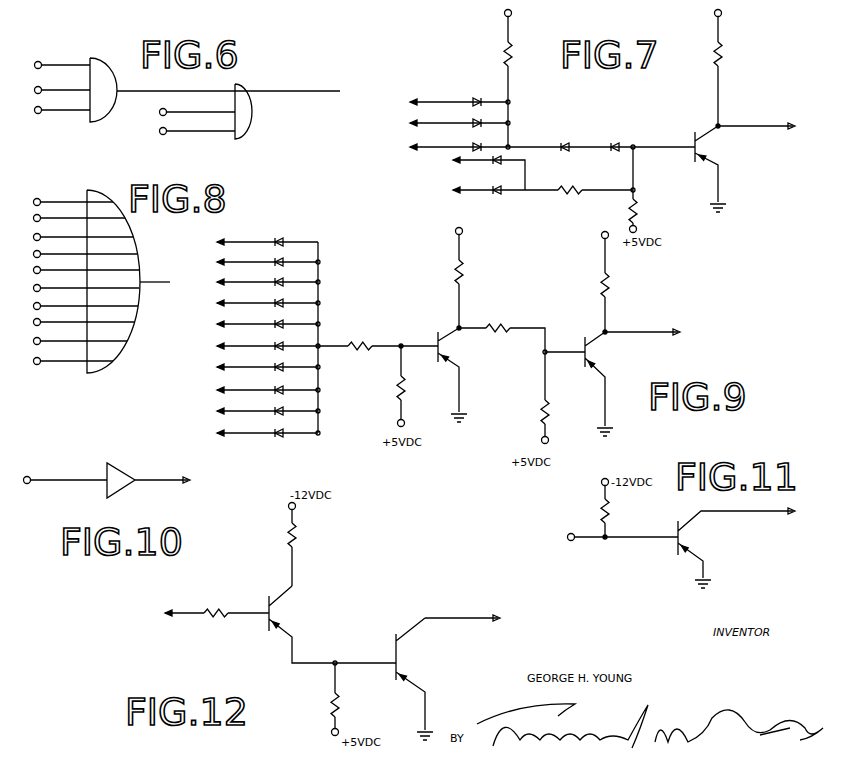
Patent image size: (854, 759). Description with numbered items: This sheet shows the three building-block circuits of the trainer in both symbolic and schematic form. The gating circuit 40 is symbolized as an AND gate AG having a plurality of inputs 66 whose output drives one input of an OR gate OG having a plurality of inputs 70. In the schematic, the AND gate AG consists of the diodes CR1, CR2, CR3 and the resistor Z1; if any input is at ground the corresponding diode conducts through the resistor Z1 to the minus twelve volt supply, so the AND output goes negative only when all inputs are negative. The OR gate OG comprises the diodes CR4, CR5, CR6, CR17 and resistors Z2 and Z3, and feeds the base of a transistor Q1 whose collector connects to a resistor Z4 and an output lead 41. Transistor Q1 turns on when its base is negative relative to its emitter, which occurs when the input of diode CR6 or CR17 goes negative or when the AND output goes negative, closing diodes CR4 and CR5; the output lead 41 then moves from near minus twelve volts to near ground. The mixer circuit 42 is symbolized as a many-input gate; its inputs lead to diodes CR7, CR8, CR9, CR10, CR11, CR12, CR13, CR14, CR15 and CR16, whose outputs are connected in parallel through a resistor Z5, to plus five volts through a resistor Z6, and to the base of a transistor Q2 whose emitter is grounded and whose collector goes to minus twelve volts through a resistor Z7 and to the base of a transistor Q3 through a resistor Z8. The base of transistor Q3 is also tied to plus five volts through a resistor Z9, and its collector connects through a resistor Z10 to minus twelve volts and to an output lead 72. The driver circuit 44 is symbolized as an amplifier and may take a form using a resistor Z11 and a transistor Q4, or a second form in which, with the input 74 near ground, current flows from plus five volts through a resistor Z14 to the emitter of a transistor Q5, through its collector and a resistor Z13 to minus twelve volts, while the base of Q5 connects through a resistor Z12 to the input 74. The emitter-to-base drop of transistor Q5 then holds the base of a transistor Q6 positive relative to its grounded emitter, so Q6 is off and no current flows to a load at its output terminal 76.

In FIG. 6, the gating circuit 40 is at (137, 86).
In FIG. 7, the output lead 41 is at (741, 126).
In FIG. 8, the mixer circuit 42 is at (144, 278).
In FIG. 10, the driver circuit 44 is at (144, 462).
In FIG. 11, the driver circuit 44 is at (660, 547).
In FIG. 6, the inputs 66 is at (45, 112).
In FIG. 6, the inputs 70 is at (173, 138).
In FIG. 9, the output lead 72 is at (636, 332).
In FIG. 12, the input terminal 74 is at (195, 613).
In FIG. 12, the output terminal 76 is at (447, 621).
In FIG. 6, the AND gate AG is at (97, 72).
In FIG. 7, the AND gate AG is at (638, 139).
In FIG. 6, the OR gate OG is at (249, 104).
In FIG. 7, the OR gate OG is at (514, 115).
In FIG. 7, the transistor Q1 is at (716, 169).
In FIG. 9, the transistor Q2 is at (453, 375).
In FIG. 9, the transistor Q3 is at (604, 384).
In FIG. 11, the transistor Q4 is at (736, 548).
In FIG. 12, the transistor Q5 is at (332, 624).
In FIG. 12, the transistor Q6 is at (414, 679).
In FIG. 7, the resistor Z1 is at (518, 56).
In FIG. 7, the resistor Z2 is at (570, 182).
In FIG. 7, the resistor Z3 is at (643, 190).
In FIG. 7, the resistor Z4 is at (728, 68).
In FIG. 9, the resistor Z5 is at (378, 339).
In FIG. 9, the resistor Z6 is at (411, 385).
In FIG. 9, the resistor Z7 is at (469, 278).
In FIG. 9, the resistor Z8 is at (501, 339).
In FIG. 9, the resistor Z9 is at (563, 397).
In FIG. 9, the resistor Z10 is at (617, 282).
In FIG. 11, the resistor Z11 is at (618, 509).
In FIG. 12, the resistor Z12 is at (217, 605).
In FIG. 12, the resistor Z13 is at (306, 545).
In FIG. 12, the resistor Z14 is at (348, 698).
In FIG. 7, the diode CR1 is at (459, 96).
In FIG. 7, the diode CR2 is at (459, 117).
In FIG. 7, the diode CR3 is at (521, 141).
In FIG. 7, the diode CR4 is at (569, 139).
In FIG. 7, the diode CR5 is at (621, 139).
In FIG. 7, the diode CR6 is at (489, 173).
In FIG. 9, the diode CR7 is at (267, 236).
In FIG. 9, the diode CR8 is at (268, 256).
In FIG. 9, the diode CR9 is at (268, 276).
In FIG. 9, the diode CR10 is at (268, 297).
In FIG. 9, the diode CR11 is at (268, 318).
In FIG. 9, the diode CR12 is at (268, 340).
In FIG. 9, the diode CR13 is at (268, 361).
In FIG. 9, the diode CR14 is at (268, 384).
In FIG. 9, the diode CR15 is at (268, 405).
In FIG. 9, the diode CR16 is at (268, 427).
In FIG. 7, the diode CR17 is at (543, 200).